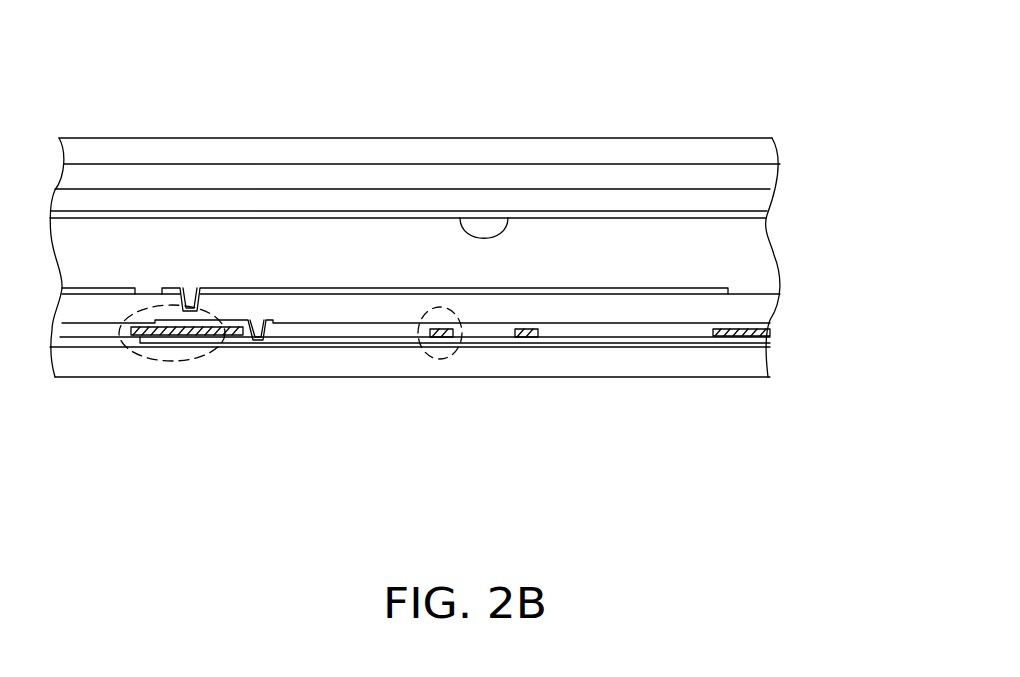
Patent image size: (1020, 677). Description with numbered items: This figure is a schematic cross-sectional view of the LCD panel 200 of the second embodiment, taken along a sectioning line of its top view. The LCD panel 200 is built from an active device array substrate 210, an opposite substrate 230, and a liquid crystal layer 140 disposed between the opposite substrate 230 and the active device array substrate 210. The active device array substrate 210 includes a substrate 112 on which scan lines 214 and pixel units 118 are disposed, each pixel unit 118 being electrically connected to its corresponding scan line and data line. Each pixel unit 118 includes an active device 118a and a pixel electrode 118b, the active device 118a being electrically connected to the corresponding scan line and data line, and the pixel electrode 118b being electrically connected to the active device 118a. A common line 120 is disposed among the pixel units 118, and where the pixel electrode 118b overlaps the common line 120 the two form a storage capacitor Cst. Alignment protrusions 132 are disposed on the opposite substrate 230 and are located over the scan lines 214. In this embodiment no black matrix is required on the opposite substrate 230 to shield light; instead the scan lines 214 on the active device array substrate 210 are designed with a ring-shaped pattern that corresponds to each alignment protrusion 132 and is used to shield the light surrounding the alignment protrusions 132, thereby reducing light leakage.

The LCD panel 200 is at (835, 514).
The opposite substrate 230 is at (791, 148).
The alignment protrusion 132 is at (500, 228).
The liquid crystal layer 140 is at (741, 253).
The active device array substrate 210 is at (680, 386).
The pixel unit 118 is at (437, 433).
The active device 118a is at (427, 358).
The pixel electrode 118b is at (340, 290).
The scan line 214 is at (450, 331).
The common line 120 is at (160, 334).
The storage capacitor Cst is at (218, 361).
The substrate 112 is at (758, 362).